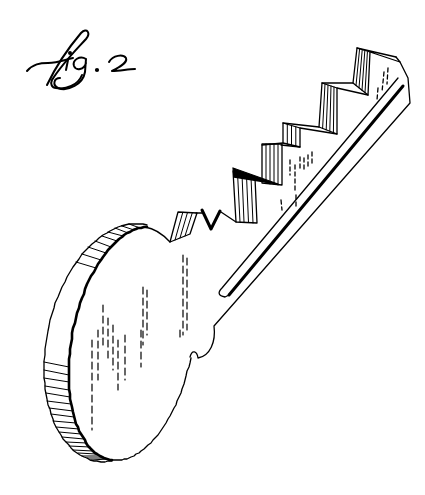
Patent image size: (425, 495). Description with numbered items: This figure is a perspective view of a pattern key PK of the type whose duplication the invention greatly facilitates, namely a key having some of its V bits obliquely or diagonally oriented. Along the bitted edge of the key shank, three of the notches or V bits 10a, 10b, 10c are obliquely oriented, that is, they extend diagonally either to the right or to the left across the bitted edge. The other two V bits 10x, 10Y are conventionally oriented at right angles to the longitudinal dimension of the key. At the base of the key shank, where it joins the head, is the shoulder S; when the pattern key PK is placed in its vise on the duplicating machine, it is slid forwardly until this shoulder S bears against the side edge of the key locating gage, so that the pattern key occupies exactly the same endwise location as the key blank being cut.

The V bit 10a is at (354, 68).
The V bit 10x is at (321, 107).
The V bit 10b is at (284, 130).
The V bit 10c is at (263, 172).
The V bit 10Y is at (234, 190).
The shoulder S is at (202, 212).
The pattern key PK is at (138, 381).